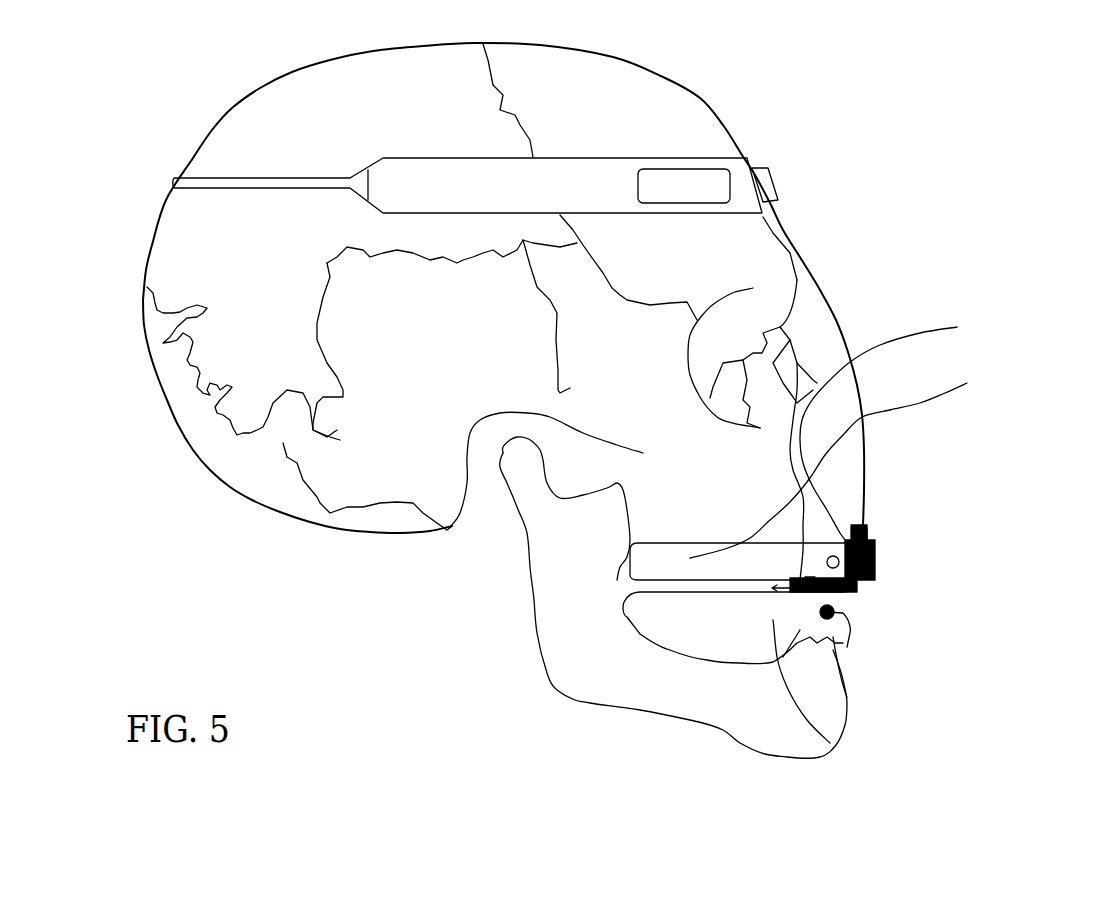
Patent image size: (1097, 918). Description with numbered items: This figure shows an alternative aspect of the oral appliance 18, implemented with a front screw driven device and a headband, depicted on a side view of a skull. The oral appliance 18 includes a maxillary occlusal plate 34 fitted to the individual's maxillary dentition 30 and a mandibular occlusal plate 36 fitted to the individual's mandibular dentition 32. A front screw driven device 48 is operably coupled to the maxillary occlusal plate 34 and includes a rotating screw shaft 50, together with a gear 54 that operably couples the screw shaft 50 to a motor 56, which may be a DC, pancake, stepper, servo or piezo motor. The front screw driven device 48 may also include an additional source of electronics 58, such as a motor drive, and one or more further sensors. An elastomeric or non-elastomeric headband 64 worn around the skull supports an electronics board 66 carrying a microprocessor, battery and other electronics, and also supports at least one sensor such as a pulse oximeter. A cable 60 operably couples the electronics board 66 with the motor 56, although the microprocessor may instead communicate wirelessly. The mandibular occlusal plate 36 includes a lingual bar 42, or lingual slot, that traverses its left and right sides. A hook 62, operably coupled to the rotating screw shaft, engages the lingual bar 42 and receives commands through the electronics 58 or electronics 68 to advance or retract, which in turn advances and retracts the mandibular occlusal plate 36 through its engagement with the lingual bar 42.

The oral appliance 18 is at (926, 629).
The maxillary dentition 30 is at (737, 543).
The mandibular dentition 32 is at (724, 692).
The maxillary occlusal plate 34 is at (899, 428).
The mandibular occlusal plate 36 is at (830, 745).
The lingual bar 42 is at (847, 697).
The front screw driven device 48 is at (895, 548).
The rotating screw shaft 50 is at (844, 462).
The gear 54 is at (870, 527).
The motor 56 is at (877, 533).
The additional source of electronics 58 is at (875, 560).
The cable 60 is at (847, 327).
The hook 62 is at (857, 593).
The headband 64 is at (577, 170).
The electronics board 66 is at (670, 180).
The electronics 68 is at (778, 187).